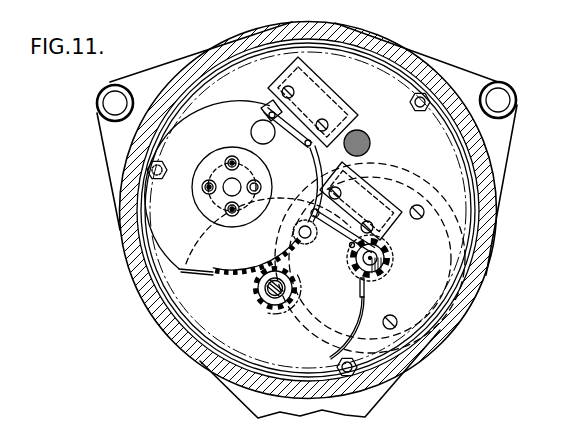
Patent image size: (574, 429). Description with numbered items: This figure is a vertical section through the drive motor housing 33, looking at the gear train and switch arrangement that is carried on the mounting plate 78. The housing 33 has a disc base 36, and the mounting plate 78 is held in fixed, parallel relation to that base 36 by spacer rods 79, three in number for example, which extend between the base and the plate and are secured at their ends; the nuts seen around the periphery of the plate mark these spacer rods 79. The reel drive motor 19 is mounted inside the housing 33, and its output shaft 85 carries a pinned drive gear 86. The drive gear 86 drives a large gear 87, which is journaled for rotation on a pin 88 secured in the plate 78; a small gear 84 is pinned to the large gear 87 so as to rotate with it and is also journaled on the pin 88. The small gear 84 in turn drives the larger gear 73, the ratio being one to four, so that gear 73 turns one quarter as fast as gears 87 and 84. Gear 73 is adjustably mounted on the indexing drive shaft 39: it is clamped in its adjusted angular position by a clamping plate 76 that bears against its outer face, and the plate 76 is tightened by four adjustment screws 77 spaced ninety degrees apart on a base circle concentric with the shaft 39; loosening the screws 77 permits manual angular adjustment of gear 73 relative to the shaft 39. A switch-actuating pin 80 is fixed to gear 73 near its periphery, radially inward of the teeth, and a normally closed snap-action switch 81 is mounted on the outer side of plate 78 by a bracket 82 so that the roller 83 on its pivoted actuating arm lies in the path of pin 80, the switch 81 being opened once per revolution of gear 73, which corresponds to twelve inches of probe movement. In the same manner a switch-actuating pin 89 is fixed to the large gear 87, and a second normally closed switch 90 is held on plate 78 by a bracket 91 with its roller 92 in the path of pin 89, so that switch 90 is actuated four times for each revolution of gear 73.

The reel drive motor 19 is at (415, 168).
The drive motor housing 33 is at (485, 276).
The base 36 is at (115, 145).
The indexing drive shaft 39 is at (238, 183).
The gear 73 is at (237, 270).
The clamping plate 76 is at (213, 203).
The adjustment screws 77 is at (225, 163).
The mounting plate 78 is at (473, 200).
The spacer rods 79 is at (411, 100).
The switch-actuating pin 80 is at (251, 131).
The switch 81 is at (318, 80).
The bracket 82 is at (333, 88).
The roller 83 is at (270, 110).
The small gear 84 is at (258, 292).
The output shaft 85 is at (377, 258).
The drive gear 86 is at (384, 273).
The large gear 87 is at (364, 295).
The pin 88 is at (274, 299).
The switch-actuating pin 89 is at (306, 240).
The switch 90 is at (370, 190).
The bracket 91 is at (390, 196).
The roller 92 is at (337, 232).